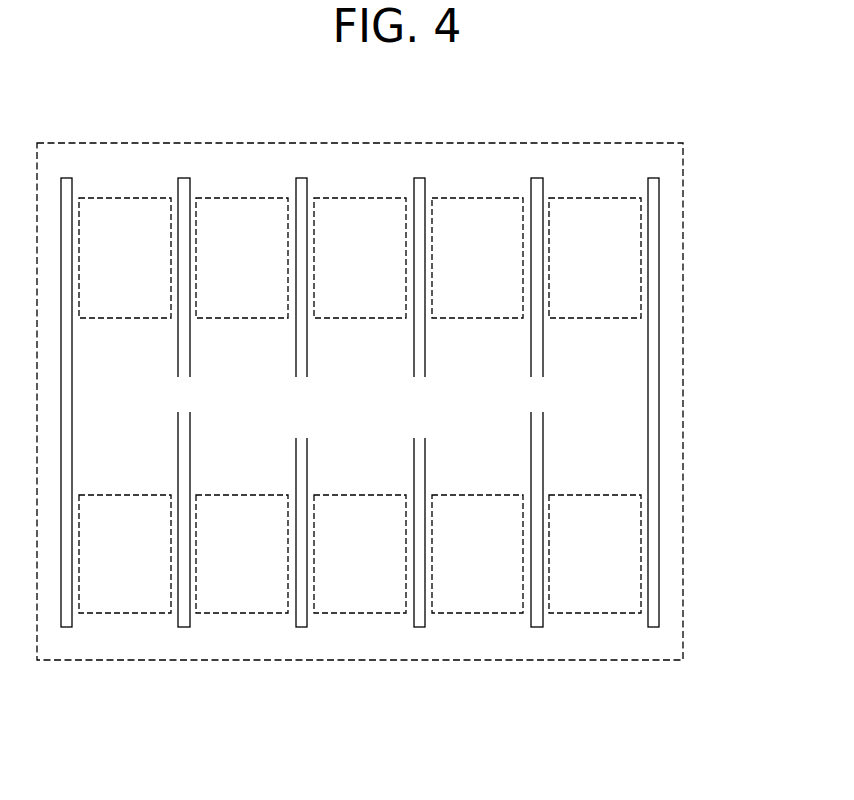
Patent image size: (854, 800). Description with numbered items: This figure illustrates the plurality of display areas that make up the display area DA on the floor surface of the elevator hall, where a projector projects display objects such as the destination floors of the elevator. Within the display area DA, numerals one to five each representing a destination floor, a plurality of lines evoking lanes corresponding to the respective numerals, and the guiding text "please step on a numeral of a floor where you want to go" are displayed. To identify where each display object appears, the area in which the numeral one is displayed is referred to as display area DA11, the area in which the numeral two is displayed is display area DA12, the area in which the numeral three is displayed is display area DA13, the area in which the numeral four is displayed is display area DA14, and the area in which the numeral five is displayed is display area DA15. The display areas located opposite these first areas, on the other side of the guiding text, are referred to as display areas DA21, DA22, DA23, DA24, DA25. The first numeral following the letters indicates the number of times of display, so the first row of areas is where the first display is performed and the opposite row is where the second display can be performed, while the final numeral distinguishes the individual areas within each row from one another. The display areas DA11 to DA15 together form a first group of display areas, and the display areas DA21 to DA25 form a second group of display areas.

The display area DA is at (684, 183).
The display area DA11 is at (111, 598).
The display area DA12 is at (240, 598).
The display area DA13 is at (360, 598).
The display area DA14 is at (475, 602).
The display area DA15 is at (600, 598).
The display area DA21 is at (122, 200).
The display area DA22 is at (242, 208).
The display area DA23 is at (363, 208).
The display area DA24 is at (482, 213).
The display area DA25 is at (605, 217).